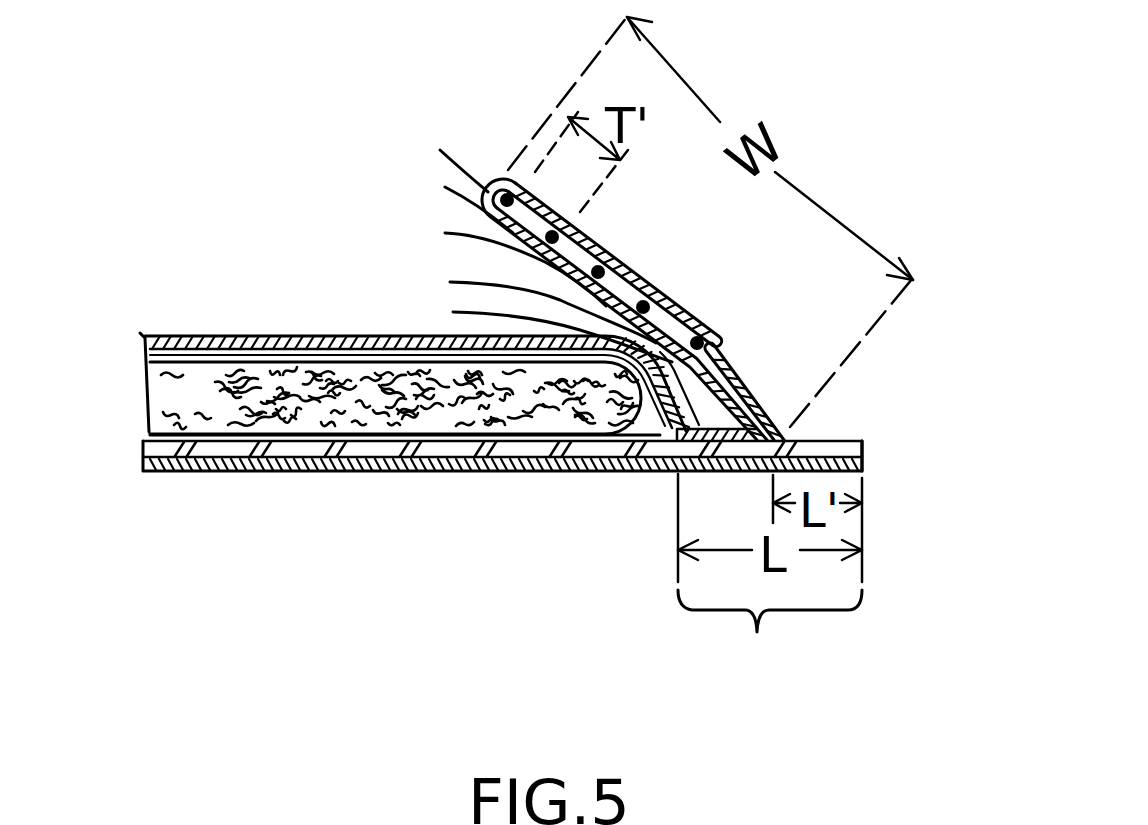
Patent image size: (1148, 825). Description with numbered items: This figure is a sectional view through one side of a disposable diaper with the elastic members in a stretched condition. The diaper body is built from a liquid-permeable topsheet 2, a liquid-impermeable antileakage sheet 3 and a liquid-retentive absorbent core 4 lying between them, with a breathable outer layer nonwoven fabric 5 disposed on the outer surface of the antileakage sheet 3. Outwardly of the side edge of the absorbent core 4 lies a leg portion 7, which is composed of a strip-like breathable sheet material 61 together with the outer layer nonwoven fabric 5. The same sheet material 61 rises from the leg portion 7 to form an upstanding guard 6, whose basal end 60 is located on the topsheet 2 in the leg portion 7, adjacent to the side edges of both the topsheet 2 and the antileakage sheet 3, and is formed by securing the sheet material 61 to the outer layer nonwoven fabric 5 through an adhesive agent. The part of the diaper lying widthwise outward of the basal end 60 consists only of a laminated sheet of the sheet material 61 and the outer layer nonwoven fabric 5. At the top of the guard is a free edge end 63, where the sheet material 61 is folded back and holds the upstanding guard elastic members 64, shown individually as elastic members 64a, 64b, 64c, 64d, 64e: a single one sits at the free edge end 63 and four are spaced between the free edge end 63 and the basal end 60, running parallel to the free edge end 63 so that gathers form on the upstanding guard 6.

The topsheet 2 is at (213, 337).
The antileakage sheet 3 is at (317, 472).
The absorbent core 4 is at (262, 407).
The outer layer nonwoven fabric 5 is at (388, 472).
The upstanding guard 6 is at (622, 263).
The leg portion 7 is at (770, 641).
The basal end 60 is at (803, 428).
The sheet material 61 is at (682, 312).
The free edge end 63 is at (491, 182).
The upstanding guard elastic member 64 is at (470, 234).
The upstanding guard elastic member 64a is at (421, 149).
The upstanding guard elastic member 64b is at (433, 192).
The upstanding guard elastic member 64c is at (480, 251).
The upstanding guard elastic member 64d is at (505, 293).
The upstanding guard elastic member 64e is at (513, 325).